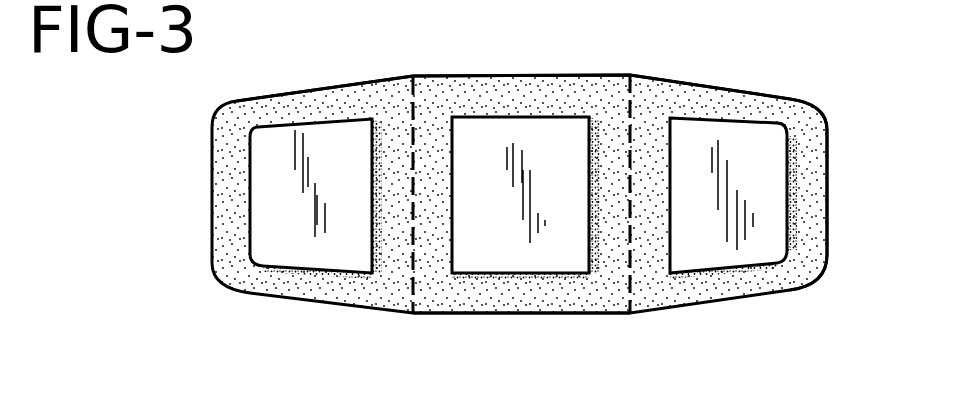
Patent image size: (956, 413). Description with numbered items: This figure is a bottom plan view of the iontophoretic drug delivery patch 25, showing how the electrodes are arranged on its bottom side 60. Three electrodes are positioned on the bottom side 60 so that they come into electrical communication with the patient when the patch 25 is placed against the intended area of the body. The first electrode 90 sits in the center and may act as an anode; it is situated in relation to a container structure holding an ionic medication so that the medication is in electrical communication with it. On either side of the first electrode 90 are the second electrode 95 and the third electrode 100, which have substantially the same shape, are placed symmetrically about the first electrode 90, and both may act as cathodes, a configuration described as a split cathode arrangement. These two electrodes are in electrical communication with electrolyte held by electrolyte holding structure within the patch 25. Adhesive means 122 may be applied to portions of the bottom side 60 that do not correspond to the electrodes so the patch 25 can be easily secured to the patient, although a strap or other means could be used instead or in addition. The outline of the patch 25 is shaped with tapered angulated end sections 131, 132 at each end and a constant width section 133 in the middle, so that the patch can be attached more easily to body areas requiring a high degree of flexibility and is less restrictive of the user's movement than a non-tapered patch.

The iontophoretic drug delivery patch 25 is at (303, 107).
The bottom side 60 is at (238, 257).
The first electrode 90 is at (510, 140).
The second electrode 95 is at (282, 193).
The third electrode 100 is at (725, 160).
The adhesive means 122 is at (800, 250).
The tapered angulated end section 131 is at (317, 278).
The tapered angulated end section 132 is at (730, 297).
The constant width section 133 is at (533, 298).